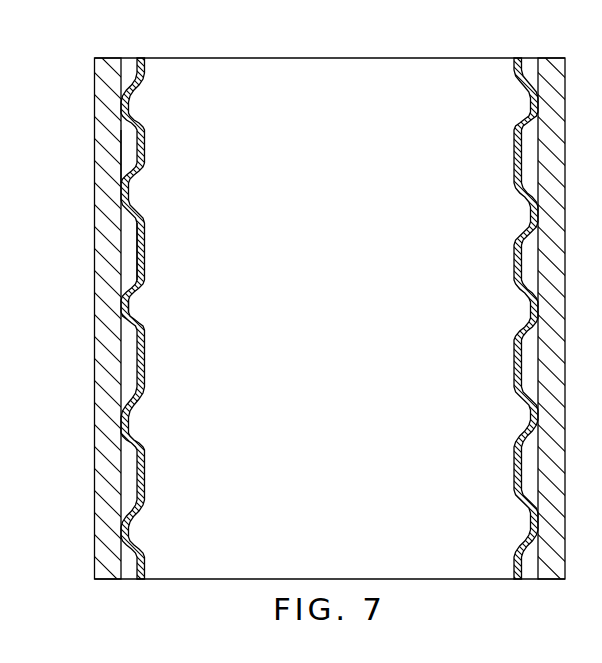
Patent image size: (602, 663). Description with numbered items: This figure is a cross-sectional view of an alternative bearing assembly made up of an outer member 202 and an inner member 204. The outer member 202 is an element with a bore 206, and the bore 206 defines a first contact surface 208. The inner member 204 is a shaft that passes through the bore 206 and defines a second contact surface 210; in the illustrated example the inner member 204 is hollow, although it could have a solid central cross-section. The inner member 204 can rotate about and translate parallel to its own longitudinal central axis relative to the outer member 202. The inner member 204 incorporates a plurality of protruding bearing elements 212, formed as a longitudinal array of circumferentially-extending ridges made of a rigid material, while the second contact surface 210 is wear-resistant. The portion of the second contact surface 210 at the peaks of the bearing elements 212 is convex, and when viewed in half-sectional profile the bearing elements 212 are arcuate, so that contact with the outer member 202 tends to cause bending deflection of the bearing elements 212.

The outer member 202 is at (108, 82).
The inner member 204 is at (144, 366).
The bore 206 is at (127, 58).
The first contact surface 208 is at (128, 156).
The second contact surface 210 is at (130, 262).
The bearing elements 212 is at (128, 310).